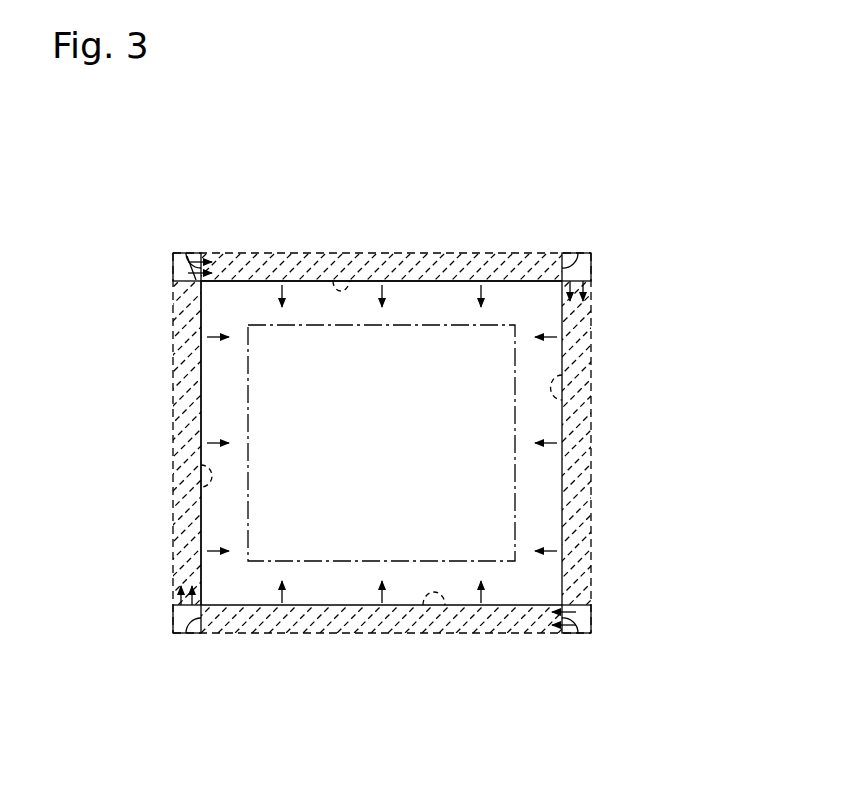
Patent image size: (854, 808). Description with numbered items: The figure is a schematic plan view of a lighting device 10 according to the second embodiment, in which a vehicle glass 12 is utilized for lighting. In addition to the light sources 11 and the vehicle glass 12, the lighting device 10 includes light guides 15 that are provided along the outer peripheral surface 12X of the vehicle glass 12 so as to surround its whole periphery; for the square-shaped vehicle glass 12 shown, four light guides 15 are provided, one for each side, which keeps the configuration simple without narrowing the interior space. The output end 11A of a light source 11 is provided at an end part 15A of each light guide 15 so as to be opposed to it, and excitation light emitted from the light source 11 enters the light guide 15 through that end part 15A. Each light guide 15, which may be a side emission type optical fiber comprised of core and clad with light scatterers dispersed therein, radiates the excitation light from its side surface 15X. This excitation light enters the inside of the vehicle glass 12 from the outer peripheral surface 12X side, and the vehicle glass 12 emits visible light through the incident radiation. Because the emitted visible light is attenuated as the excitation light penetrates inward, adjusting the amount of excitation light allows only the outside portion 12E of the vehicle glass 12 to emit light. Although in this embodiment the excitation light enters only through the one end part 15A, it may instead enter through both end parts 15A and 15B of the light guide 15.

The lighting device 10 is at (399, 199).
The light source 11 is at (570, 264).
The output end 11A is at (203, 276).
The vehicle glass 12 is at (443, 350).
The outside portion 12E is at (258, 296).
The outer peripheral surface 12X is at (197, 322).
The light guide 15 is at (512, 262).
The end part 15A is at (186, 262).
The end part 15B is at (188, 262).
The side surface 15X is at (347, 253).